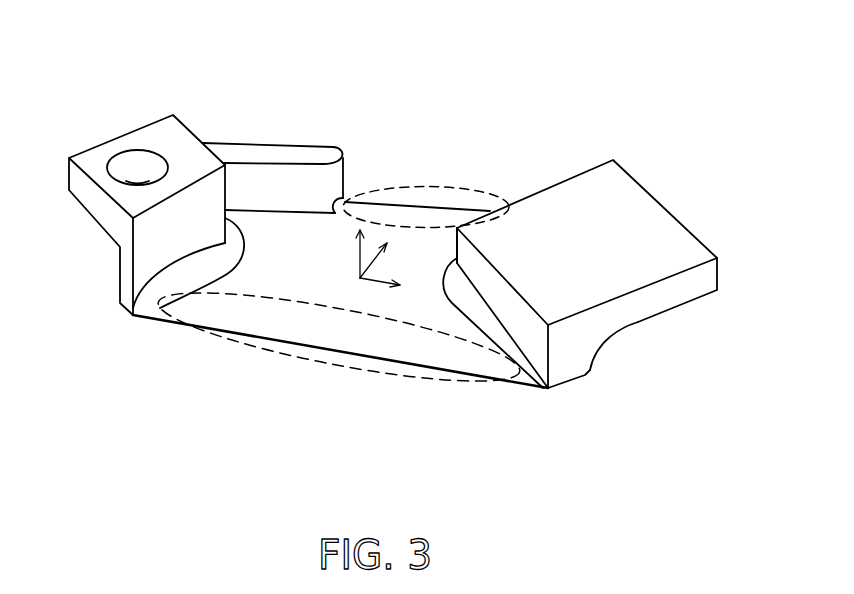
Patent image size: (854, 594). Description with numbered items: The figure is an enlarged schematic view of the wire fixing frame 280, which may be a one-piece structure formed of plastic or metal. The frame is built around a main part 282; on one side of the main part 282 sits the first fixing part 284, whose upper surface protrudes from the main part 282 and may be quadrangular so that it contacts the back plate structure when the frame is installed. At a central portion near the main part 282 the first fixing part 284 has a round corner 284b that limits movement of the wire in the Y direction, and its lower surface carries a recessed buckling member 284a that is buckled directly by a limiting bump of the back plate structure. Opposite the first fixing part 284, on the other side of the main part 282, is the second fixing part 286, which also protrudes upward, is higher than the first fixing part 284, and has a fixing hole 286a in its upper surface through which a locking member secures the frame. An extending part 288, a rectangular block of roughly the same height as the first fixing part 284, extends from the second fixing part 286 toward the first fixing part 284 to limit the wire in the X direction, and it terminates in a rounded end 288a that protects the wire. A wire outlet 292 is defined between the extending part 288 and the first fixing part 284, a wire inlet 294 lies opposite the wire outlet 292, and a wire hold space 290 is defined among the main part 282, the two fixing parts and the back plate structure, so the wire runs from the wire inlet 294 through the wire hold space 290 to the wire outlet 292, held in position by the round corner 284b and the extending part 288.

The wire fixing frame 280 is at (391, 274).
The main part 282 is at (323, 283).
The first fixing part 284 is at (610, 217).
The recessed buckling member 284a is at (633, 328).
The round corner 284b is at (458, 230).
The second fixing part 286 is at (157, 252).
The fixing hole 286a is at (138, 168).
The extending part 288 is at (310, 155).
The rounded end 288a is at (343, 173).
The wire hold space 290 is at (317, 255).
The wire outlet 292 is at (428, 187).
The wire inlet 294 is at (339, 372).